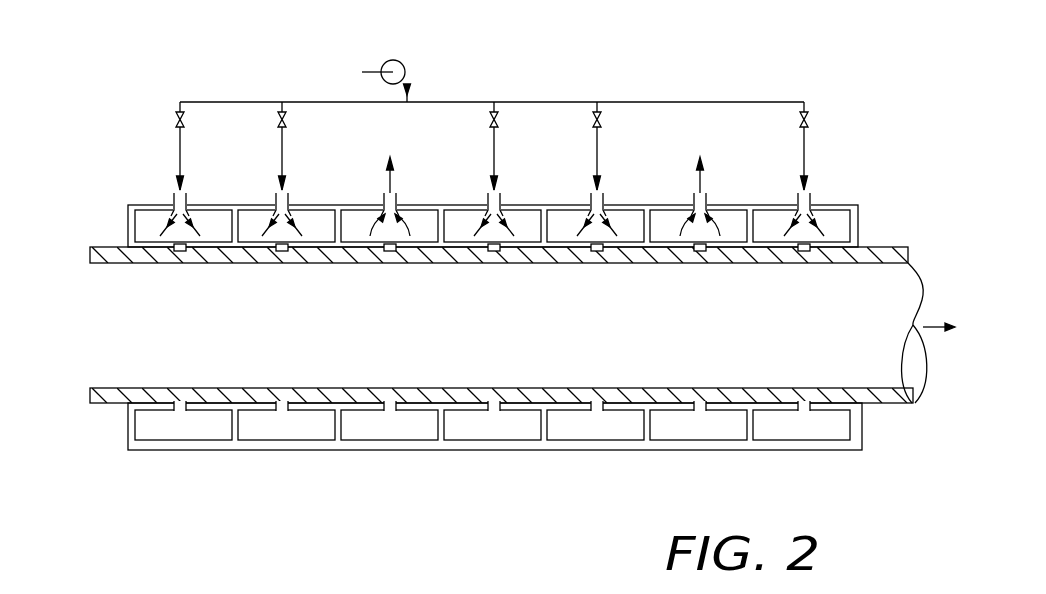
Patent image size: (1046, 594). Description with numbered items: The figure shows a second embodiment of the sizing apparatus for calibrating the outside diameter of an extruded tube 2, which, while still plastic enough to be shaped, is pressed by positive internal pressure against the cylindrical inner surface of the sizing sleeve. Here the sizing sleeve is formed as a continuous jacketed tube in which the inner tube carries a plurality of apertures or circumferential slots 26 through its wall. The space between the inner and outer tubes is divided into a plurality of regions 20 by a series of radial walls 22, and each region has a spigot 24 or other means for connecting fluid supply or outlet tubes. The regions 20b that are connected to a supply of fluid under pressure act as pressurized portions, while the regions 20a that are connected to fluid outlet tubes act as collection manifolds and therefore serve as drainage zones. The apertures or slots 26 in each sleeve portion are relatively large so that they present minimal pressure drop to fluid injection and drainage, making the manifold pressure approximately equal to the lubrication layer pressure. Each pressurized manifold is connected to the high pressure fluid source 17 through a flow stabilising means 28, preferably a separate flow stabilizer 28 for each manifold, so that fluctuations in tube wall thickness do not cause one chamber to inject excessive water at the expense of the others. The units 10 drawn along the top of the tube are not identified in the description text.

The extruded tube 2 is at (883, 250).
The fluid supply nozzle unit 10 is at (147, 220).
The high pressure fluid source 17 is at (405, 72).
The regions 20 is at (383, 432).
The drainage regions 20a is at (353, 220).
The pressurized regions 20b is at (460, 220).
The radial walls 22 is at (647, 428).
The spigot 24 is at (607, 210).
The circumferential slot 26 is at (702, 413).
The flow stabilising means 28 is at (808, 128).